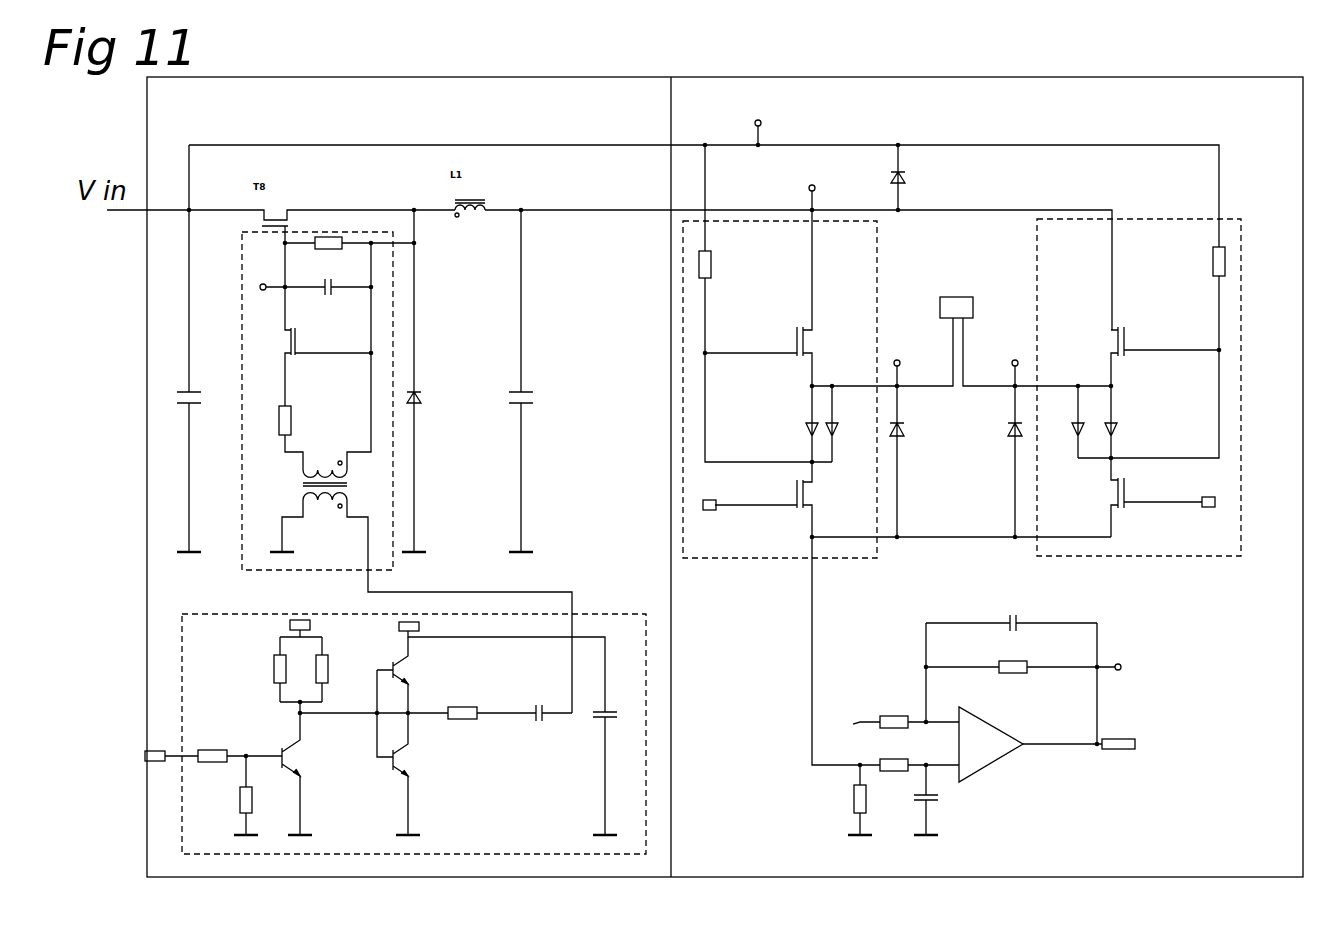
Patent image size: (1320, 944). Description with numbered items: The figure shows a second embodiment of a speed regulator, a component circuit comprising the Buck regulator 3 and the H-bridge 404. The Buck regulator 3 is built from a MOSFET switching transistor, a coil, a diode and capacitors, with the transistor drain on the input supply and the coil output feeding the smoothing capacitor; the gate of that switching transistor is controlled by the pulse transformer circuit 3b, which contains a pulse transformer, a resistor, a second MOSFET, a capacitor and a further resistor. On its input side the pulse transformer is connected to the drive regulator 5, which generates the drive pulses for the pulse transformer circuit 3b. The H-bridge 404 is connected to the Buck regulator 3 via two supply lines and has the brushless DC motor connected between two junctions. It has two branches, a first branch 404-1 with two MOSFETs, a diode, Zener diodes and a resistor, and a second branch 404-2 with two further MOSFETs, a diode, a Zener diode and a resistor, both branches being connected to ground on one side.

The Buck regulator 3 is at (395, 472).
The pulse transformer circuit 3b is at (407, 468).
The drive regulator 5 is at (395, 734).
The H-bridge 404 is at (965, 458).
The first branch 404-1 is at (780, 350).
The second branch 404-2 is at (1142, 387).